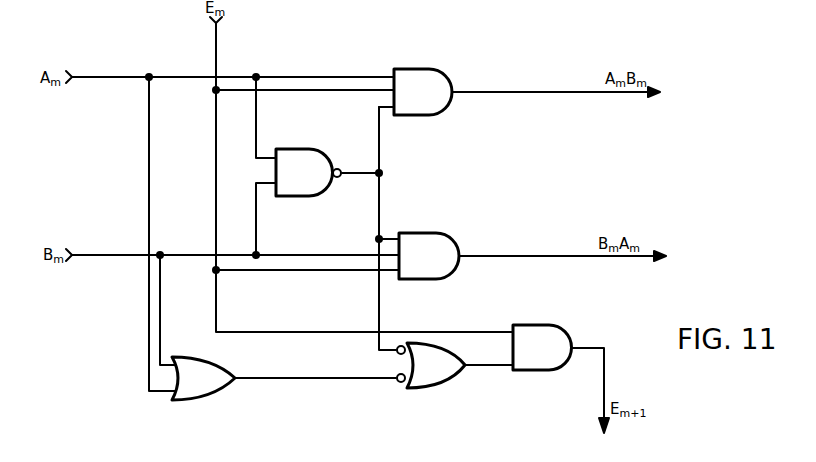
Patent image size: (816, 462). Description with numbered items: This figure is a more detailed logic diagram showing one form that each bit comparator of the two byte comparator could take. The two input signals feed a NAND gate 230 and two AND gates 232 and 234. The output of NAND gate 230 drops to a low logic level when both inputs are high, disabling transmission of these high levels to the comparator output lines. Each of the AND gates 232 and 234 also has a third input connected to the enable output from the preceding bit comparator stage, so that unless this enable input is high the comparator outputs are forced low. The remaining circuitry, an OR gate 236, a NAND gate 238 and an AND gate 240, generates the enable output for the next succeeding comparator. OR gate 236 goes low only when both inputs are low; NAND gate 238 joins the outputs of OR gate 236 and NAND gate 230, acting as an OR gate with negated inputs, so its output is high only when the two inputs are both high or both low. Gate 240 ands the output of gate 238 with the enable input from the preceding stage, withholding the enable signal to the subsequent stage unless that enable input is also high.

The NAND gate 230 is at (302, 165).
The AND gate 232 is at (418, 95).
The AND gate 234 is at (435, 252).
The OR gate 236 is at (218, 388).
The NAND gate 238 is at (438, 372).
The AND gate 240 is at (548, 340).